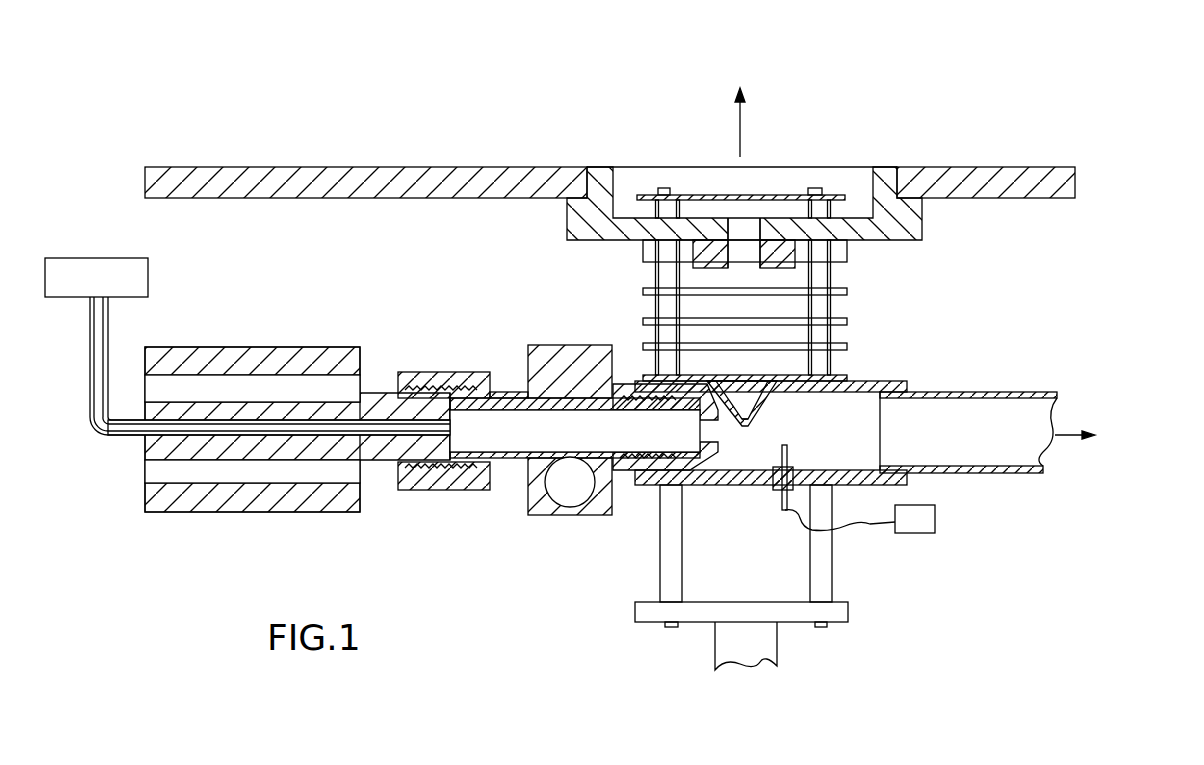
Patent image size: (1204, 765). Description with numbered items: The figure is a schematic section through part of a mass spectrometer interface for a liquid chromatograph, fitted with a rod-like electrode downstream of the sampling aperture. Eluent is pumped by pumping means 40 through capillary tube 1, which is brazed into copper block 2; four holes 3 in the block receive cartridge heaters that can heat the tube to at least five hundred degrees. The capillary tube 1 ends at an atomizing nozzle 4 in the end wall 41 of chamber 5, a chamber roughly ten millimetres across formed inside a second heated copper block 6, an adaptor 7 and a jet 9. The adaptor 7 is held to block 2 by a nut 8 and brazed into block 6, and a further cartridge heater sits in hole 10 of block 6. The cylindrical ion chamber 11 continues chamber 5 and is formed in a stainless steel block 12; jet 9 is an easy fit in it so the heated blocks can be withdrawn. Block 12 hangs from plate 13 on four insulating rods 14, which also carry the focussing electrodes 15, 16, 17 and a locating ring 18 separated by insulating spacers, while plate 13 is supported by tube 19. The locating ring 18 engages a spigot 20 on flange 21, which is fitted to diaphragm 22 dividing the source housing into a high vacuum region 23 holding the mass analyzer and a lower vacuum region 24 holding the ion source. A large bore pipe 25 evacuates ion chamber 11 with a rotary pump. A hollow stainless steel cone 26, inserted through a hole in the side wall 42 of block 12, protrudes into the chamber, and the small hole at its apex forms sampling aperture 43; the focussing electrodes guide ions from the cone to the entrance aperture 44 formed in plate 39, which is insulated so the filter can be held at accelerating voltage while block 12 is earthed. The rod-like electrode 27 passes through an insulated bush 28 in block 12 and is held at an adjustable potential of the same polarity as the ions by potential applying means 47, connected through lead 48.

The capillary tube 1 is at (125, 440).
The copper block 2 is at (236, 512).
The holes 3 is at (309, 470).
The atomizing nozzle 4 is at (453, 427).
The chamber 5 is at (503, 418).
The heated copper block 6 is at (538, 345).
The adaptor 7 is at (510, 394).
The nut 8 is at (447, 372).
The jet 9 is at (742, 484).
The hole 10 is at (570, 495).
The ion chamber 11 is at (848, 437).
The stainless steel block 12 is at (907, 480).
The plate 13 is at (840, 625).
The insulating rods 14 is at (668, 568).
The focussing electrode 15 is at (847, 348).
The focussing electrode 16 is at (847, 322).
The focussing electrode 17 is at (847, 292).
The locating ring 18 is at (847, 255).
The tube 19 is at (715, 643).
The spigot 20 is at (713, 250).
The flange 21 is at (922, 222).
The diaphragm 22 is at (270, 167).
The high vacuum region 23 is at (722, 140).
The lower vacuum region 24 is at (387, 577).
The large bore pipe 25 is at (995, 473).
The hollow stainless steel cone 26 is at (765, 405).
The rod-like electrode 27 is at (790, 455).
The insulated bush 28 is at (780, 497).
The plate 39 is at (786, 195).
The pumping means 40 is at (77, 262).
The end wall 41 is at (448, 410).
The side wall 42 is at (868, 378).
The sampling aperture 43 is at (742, 428).
The entrance aperture 44 is at (742, 193).
The potential applying means 47 is at (935, 527).
The lead 48 is at (870, 528).